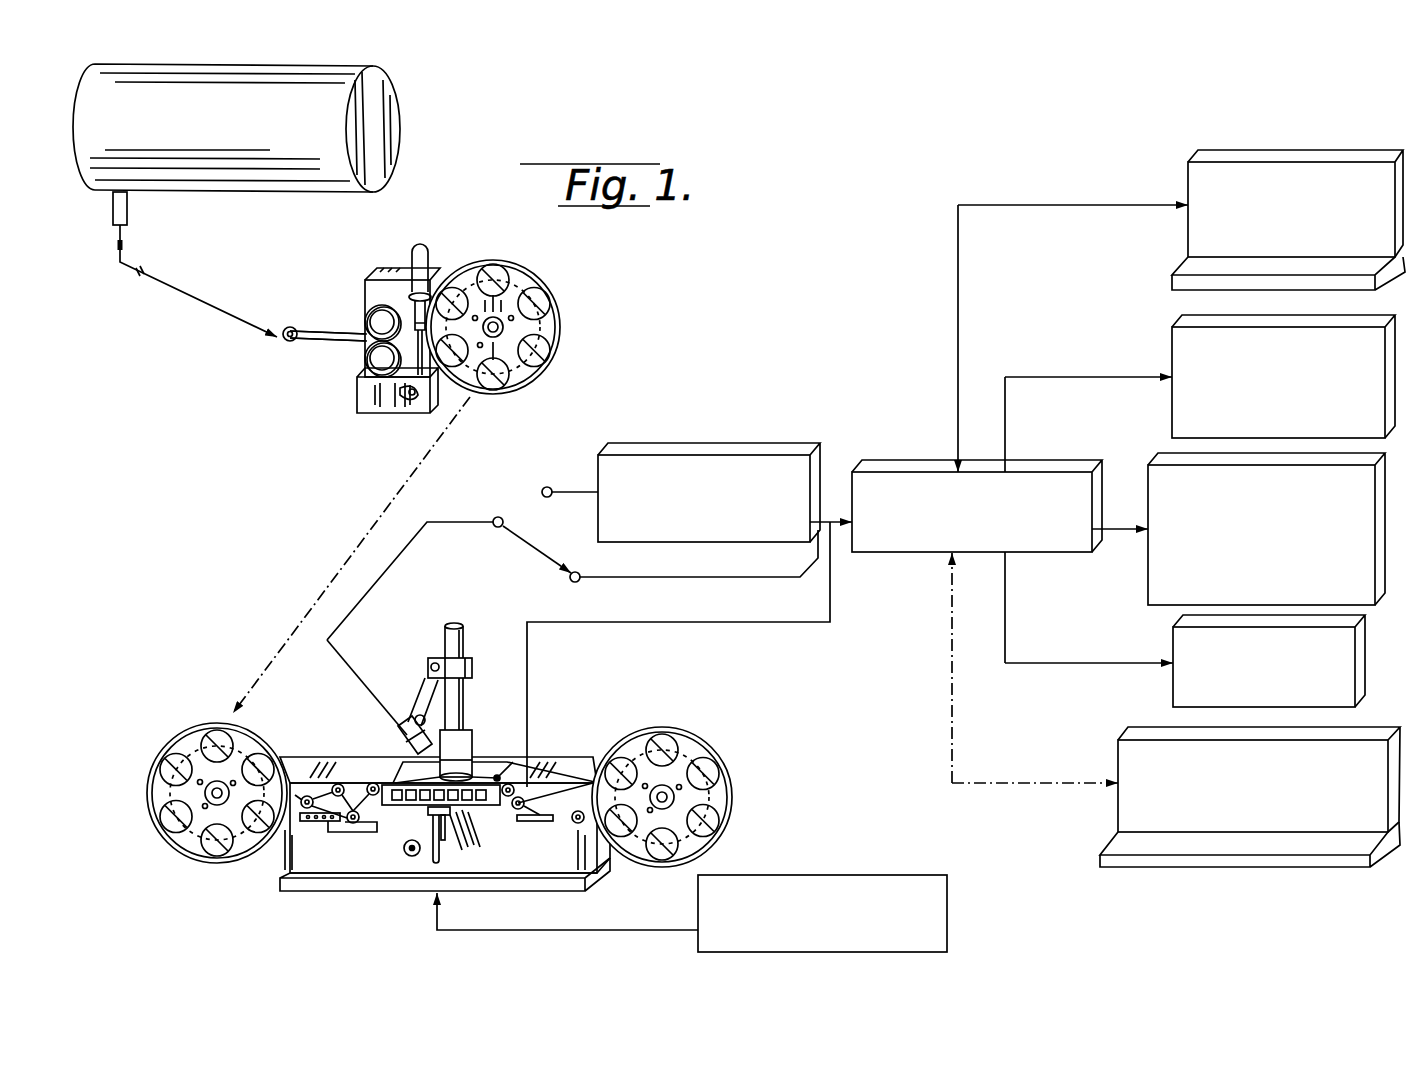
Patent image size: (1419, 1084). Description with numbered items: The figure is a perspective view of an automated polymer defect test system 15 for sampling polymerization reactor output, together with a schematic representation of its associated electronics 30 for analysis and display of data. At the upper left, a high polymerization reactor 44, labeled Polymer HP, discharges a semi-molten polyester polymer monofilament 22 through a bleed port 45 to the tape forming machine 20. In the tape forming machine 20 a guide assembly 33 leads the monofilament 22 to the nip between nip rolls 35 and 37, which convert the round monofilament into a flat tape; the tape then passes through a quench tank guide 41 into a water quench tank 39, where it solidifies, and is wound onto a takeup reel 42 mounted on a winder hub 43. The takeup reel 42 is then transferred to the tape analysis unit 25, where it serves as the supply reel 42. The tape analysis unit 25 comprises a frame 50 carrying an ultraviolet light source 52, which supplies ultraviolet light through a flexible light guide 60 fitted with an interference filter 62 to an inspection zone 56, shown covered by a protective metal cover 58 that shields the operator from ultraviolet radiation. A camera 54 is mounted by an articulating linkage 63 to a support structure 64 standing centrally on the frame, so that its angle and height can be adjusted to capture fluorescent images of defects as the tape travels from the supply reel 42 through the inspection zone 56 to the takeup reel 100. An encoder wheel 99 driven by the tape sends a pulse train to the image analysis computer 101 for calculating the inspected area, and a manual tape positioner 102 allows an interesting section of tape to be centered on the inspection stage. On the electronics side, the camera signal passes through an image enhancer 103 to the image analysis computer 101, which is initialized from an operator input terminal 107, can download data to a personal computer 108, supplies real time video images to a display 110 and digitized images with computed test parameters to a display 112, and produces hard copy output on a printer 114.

The automated polymer defect test system 15 is at (693, 260).
The tape forming machine 20 is at (557, 318).
The polymer monofilament 22 is at (218, 320).
The tape analysis unit 25 is at (540, 673).
The associated electronics 30 is at (1117, 183).
The guide assembly 33 is at (312, 330).
The nip roll 35 is at (378, 325).
The nip roll 37 is at (380, 362).
The water quench tank 39 is at (368, 390).
The quench tank guide 41 is at (380, 410).
The takeup reel 42 is at (527, 382).
The winder hub 43 is at (497, 327).
The high polymerization reactor 44 is at (392, 102).
The bleed port 45 is at (127, 206).
The frame 50 is at (357, 867).
The ultraviolet light source 52 is at (808, 877).
The camera 54 is at (407, 738).
The inspection zone 56 is at (480, 747).
The protective metal cover 58 is at (472, 718).
The flexible light guide 60 is at (472, 833).
The interference filter 62 is at (447, 807).
The articulating linkage 63 is at (425, 693).
The support structure 64 is at (465, 642).
The encoder wheel 99 is at (513, 783).
The takeup reel 100 is at (735, 798).
The image analysis computer 101 is at (932, 553).
The manual tape positioner 102 is at (412, 857).
The image enhancer 103 is at (808, 428).
The operator input terminal 107 is at (1396, 153).
The personal computer 108 is at (1118, 760).
The real time video display 110 is at (1172, 362).
The digitized image display 112 is at (1148, 485).
The printer 114 is at (1173, 640).